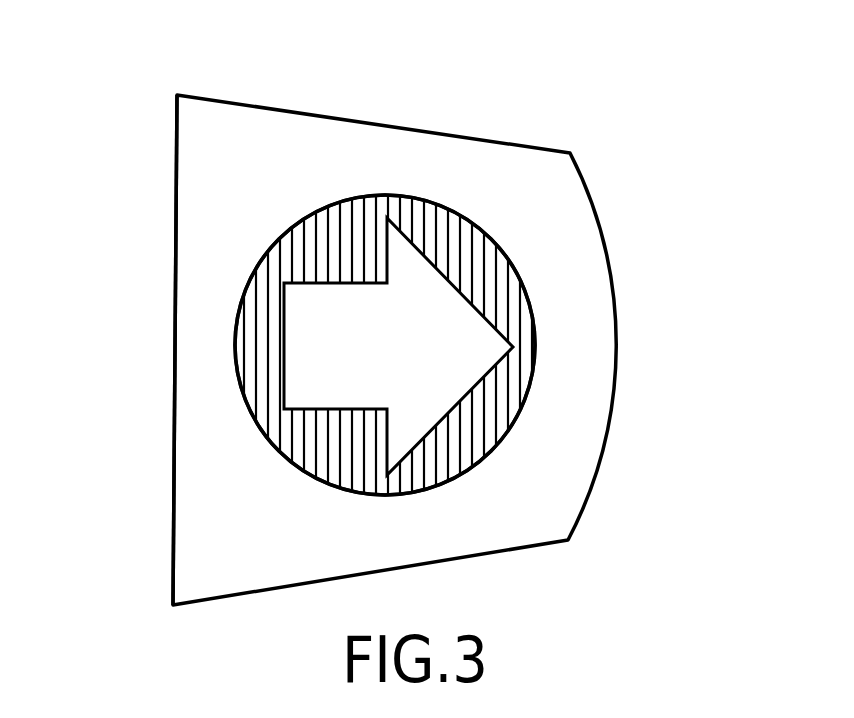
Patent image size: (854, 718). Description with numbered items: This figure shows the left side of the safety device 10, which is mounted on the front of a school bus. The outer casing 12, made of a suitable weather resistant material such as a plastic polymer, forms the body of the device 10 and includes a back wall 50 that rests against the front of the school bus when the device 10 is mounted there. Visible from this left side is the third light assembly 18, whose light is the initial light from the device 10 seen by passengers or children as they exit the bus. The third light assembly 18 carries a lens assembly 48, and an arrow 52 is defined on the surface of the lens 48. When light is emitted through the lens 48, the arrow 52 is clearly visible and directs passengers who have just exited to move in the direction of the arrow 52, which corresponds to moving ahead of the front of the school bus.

The safety device 10 is at (485, 92).
The outer casing 12 is at (288, 143).
The third light assembly 18 is at (472, 374).
The lens assembly 48 is at (493, 418).
The back wall 50 is at (174, 345).
The arrow 52 is at (455, 355).